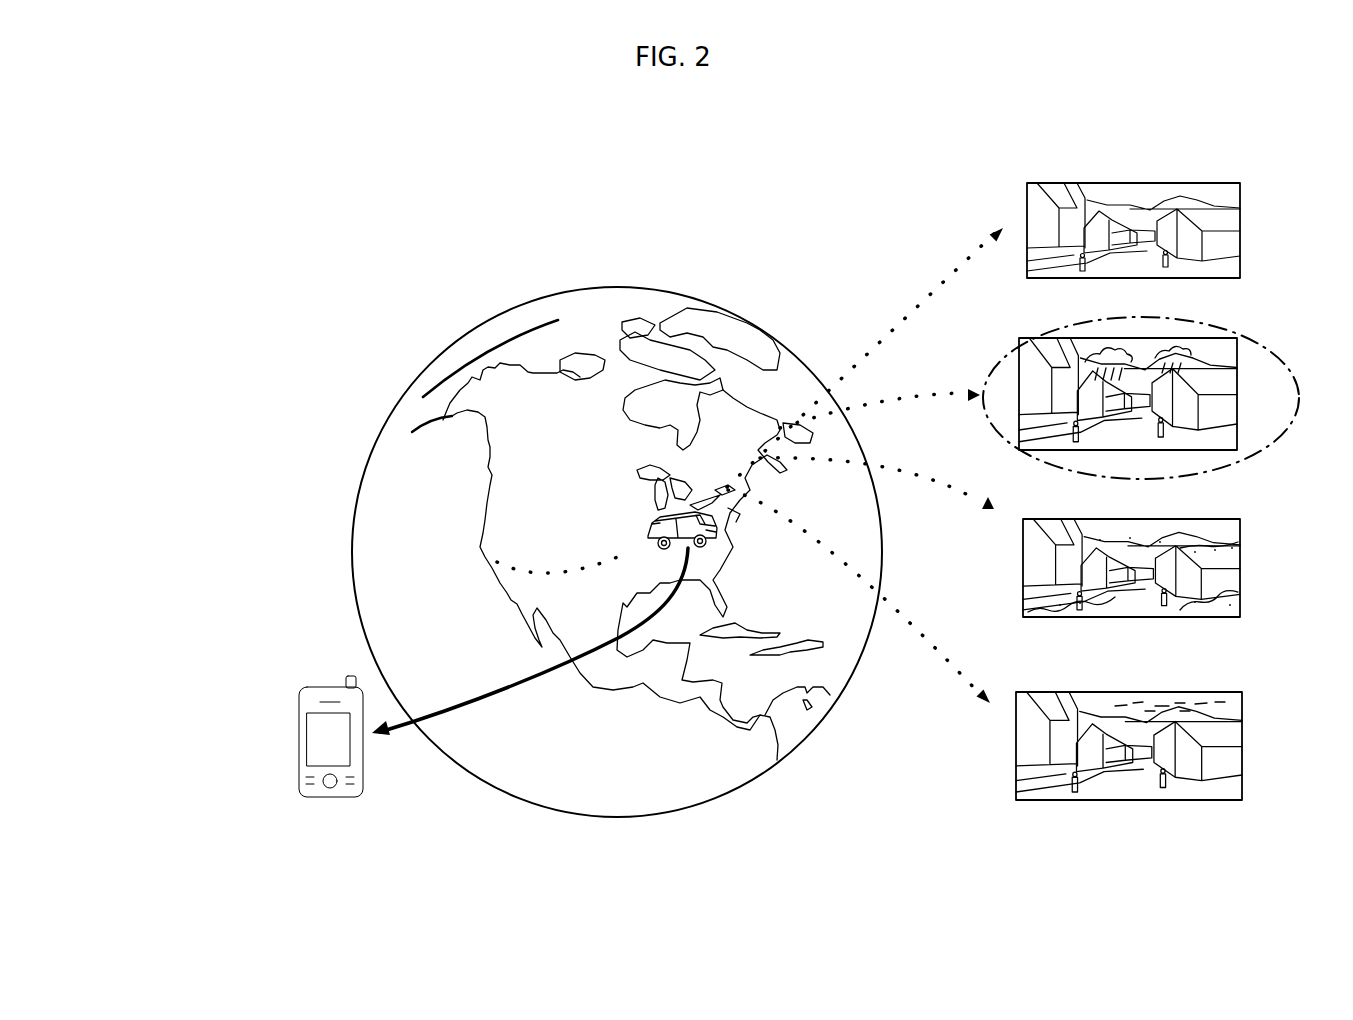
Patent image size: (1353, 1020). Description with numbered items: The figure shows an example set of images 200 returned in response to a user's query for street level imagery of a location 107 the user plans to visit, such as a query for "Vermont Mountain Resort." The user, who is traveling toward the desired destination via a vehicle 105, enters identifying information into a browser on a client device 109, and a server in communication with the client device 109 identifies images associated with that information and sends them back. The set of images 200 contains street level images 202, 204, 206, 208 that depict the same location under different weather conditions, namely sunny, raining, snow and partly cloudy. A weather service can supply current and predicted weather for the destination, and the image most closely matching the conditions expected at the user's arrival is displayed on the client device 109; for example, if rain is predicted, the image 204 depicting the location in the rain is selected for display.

The set of images 200 is at (1313, 51).
The vehicle 105 is at (663, 515).
The location 107 is at (733, 517).
The client device 109 is at (317, 695).
The street level image 202 is at (1243, 183).
The street level image 204 is at (1239, 352).
The street level image 206 is at (1241, 518).
The street level image 208 is at (1242, 692).